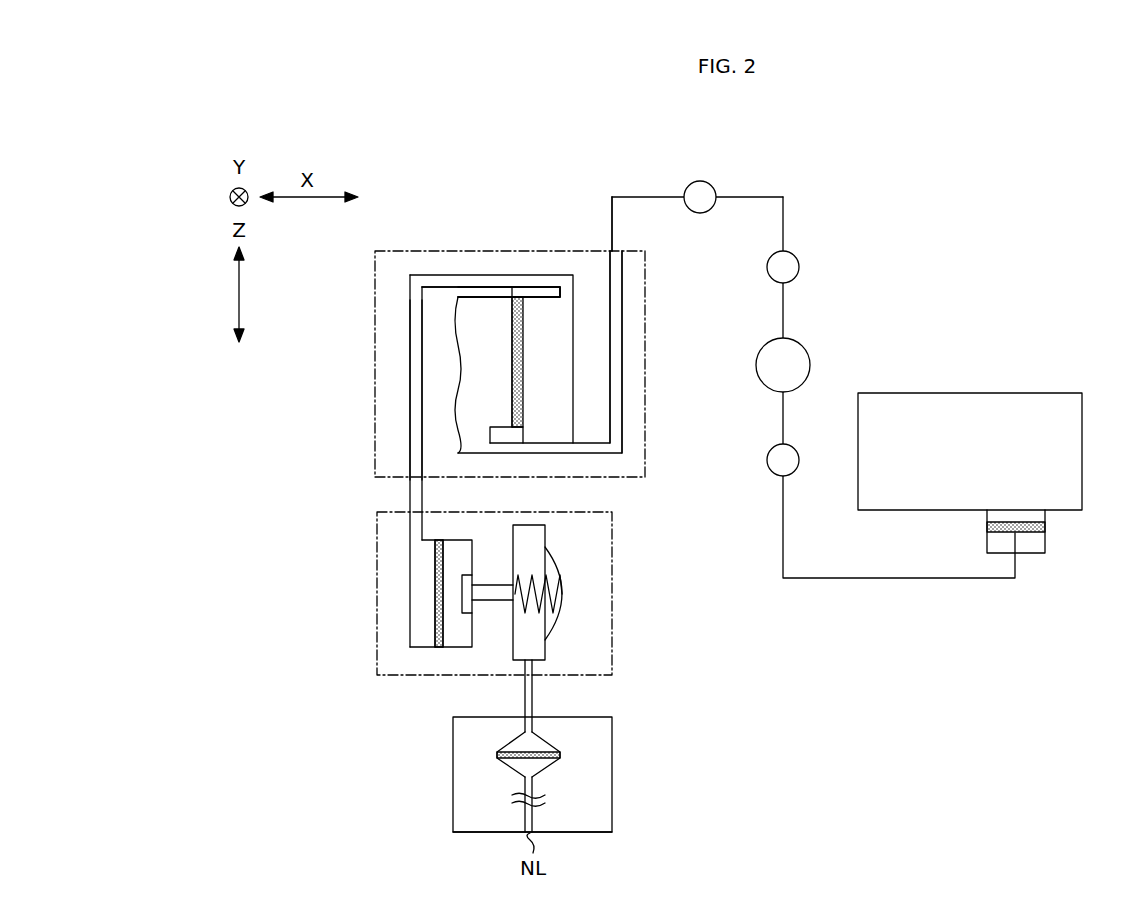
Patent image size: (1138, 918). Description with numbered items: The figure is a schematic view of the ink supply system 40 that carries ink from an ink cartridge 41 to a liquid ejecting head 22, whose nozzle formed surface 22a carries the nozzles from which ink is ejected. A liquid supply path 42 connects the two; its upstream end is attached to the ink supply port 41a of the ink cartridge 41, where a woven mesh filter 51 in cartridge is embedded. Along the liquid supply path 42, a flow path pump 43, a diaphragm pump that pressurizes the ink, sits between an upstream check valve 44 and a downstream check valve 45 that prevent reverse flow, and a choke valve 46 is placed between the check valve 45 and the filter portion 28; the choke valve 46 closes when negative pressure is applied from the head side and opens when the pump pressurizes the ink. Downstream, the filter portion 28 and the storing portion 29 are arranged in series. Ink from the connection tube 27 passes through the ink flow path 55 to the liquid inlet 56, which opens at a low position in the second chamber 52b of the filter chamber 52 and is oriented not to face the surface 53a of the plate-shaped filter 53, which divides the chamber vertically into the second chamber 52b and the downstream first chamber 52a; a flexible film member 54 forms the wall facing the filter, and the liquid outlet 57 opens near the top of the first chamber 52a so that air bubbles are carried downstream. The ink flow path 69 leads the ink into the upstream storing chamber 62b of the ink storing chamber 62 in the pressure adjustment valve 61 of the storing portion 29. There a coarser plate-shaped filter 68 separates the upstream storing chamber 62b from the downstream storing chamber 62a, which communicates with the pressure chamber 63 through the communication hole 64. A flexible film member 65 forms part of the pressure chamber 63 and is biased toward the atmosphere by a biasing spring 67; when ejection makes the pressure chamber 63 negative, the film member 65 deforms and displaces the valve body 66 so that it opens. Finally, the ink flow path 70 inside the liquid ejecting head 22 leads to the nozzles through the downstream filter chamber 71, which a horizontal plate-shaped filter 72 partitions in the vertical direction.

The liquid ejecting head 22 is at (613, 785).
The nozzle formed surface 22a is at (597, 833).
The connection tube 27 is at (615, 222).
The filter portion 28 is at (374, 287).
The storing portion 29 is at (377, 530).
The ink supply system 40 is at (893, 265).
The ink cartridge 41 is at (1050, 393).
The ink supply port 41a is at (1046, 546).
The liquid supply path 42 is at (408, 493).
The flow path pump 43 is at (810, 350).
The check valve 44 is at (795, 449).
The check valve 45 is at (799, 265).
The choke valve 46 is at (702, 181).
The filter in cartridge 51 is at (1017, 522).
The filter chamber 52 is at (553, 216).
The first chamber 52a is at (538, 307).
The second chamber 52b is at (482, 307).
The filter 53 is at (522, 328).
The surface of the filter 53a is at (510, 367).
The film member 54 is at (460, 400).
The ink flow path 55 is at (623, 355).
The liquid inlet 56 is at (490, 447).
The liquid outlet 57 is at (567, 297).
The pressure adjustment valve 61 is at (387, 583).
The ink storing chamber 62 is at (314, 623).
The downstream storing chamber 62a is at (458, 640).
The upstream storing chamber 62b is at (423, 635).
The pressure chamber 63 is at (537, 620).
The communication hole 64 is at (488, 600).
The film member 65 is at (547, 547).
The valve body 66 is at (455, 570).
The biasing spring 67 is at (562, 598).
The filter 68 is at (433, 558).
The ink flow path 69 is at (417, 347).
The ink flow path 70 is at (532, 700).
The filter chamber 71 is at (550, 740).
The filter 72 is at (518, 749).